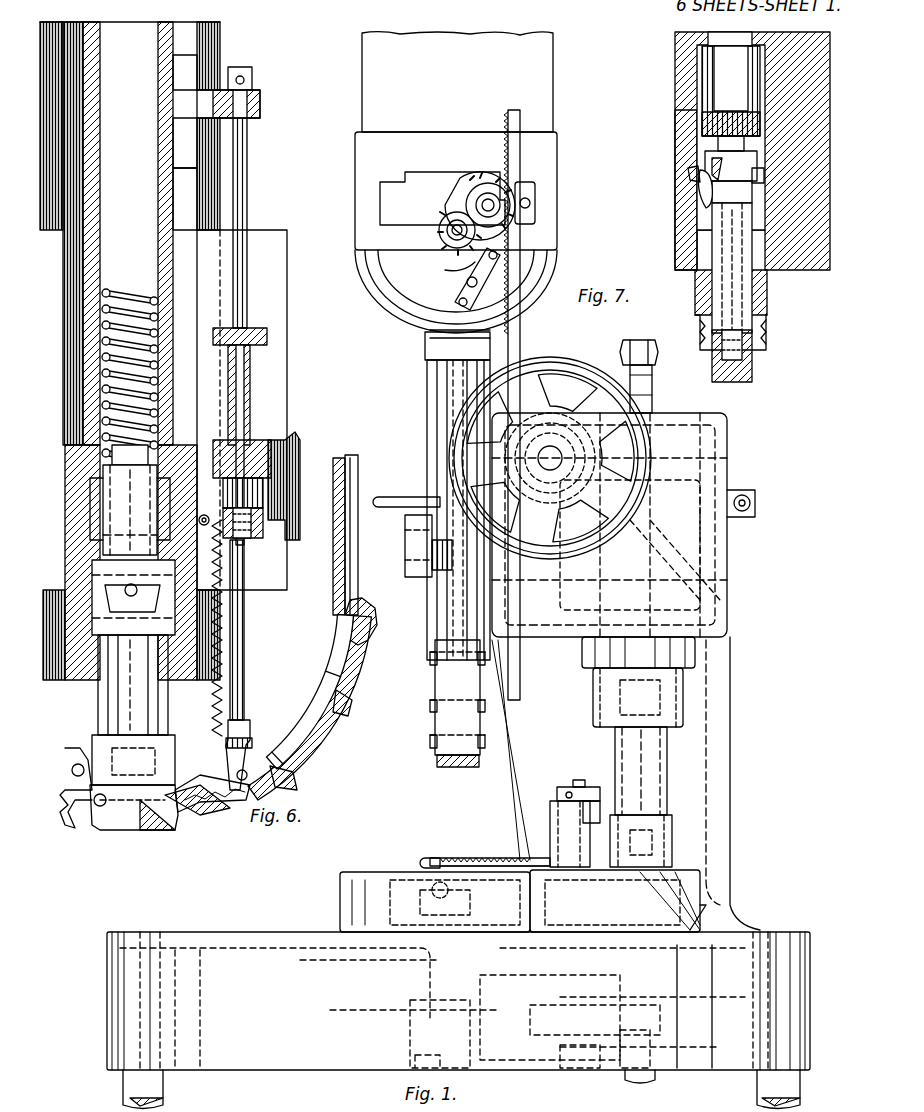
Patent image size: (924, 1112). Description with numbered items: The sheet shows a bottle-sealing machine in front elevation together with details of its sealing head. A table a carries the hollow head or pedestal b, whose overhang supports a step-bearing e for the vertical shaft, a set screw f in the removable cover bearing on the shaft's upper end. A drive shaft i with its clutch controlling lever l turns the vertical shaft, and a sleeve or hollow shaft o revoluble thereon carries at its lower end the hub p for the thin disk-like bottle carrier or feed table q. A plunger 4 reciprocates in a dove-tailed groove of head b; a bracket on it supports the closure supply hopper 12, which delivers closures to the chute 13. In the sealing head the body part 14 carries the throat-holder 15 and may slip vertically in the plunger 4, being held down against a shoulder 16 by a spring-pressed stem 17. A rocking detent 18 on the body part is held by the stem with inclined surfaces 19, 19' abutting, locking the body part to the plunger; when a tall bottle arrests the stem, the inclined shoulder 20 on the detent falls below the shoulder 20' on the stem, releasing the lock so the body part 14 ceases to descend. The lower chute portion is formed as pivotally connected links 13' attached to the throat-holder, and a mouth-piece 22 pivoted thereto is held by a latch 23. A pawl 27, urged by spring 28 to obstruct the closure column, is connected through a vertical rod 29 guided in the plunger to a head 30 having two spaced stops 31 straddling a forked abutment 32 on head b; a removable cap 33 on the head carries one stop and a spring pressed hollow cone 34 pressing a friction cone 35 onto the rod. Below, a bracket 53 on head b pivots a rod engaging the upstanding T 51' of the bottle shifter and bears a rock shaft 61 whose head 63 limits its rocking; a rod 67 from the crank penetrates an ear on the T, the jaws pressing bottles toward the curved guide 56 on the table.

In FIG. 6, the plunger 4 is at (80, 680).
In FIG. 7, the plunger 4 is at (675, 250).
In FIG. 1, the closure supply hopper 12 is at (557, 225).
In FIG. 6, the chute 13 is at (321, 627).
In FIG. 1, the chute 13 is at (444, 496).
In FIG. 6, the pivotally connected links 13' is at (278, 741).
In FIG. 1, the pivotally connected links 13' is at (444, 697).
In FIG. 6, the body part of the sealing head 14 is at (98, 716).
In FIG. 7, the body part of the sealing head 14 is at (767, 293).
In FIG. 6, the throat-holder 15 is at (160, 758).
In FIG. 6, the shoulder 16 is at (185, 650).
In FIG. 7, the shoulder 16 is at (770, 225).
In FIG. 6, the spring-pressed stem 17 is at (130, 500).
In FIG. 7, the spring-pressed stem 17 is at (745, 300).
In FIG. 6, the rocking detent 18 is at (95, 598).
In FIG. 7, the rocking detent 18 is at (700, 192).
In FIG. 7, the inclined surface 19 is at (669, 166).
In FIG. 7, the inclined surface 19' is at (681, 184).
In FIG. 7, the inclined shoulder 20 is at (733, 158).
In FIG. 7, the inclined shoulder 20' is at (738, 185).
In FIG. 6, the mouth-piece 22 is at (122, 830).
In FIG. 1, the mouth-piece 22 is at (455, 767).
In FIG. 6, the latch 23 is at (65, 790).
In FIG. 6, the pawl 27 is at (255, 754).
In FIG. 6, the spring 28 is at (222, 652).
In FIG. 6, the vertical rod 29 is at (244, 610).
In FIG. 6, the head 30 is at (250, 400).
In FIG. 6, the stops 31 is at (267, 336).
In FIG. 6, the forked abutment 32 is at (300, 460).
In FIG. 6, the removable cap 33 is at (263, 525).
In FIG. 6, the spring pressed hollow cone 34 is at (263, 502).
In FIG. 6, the friction cone 35 is at (268, 482).
In FIG. 1, the upstanding T 51' is at (490, 848).
In FIG. 1, the bracket 53 is at (550, 810).
In FIG. 1, the curved guide 56 is at (368, 872).
In FIG. 1, the rock shaft 61 is at (560, 787).
In FIG. 1, the head 63 is at (592, 790).
In FIG. 1, the rod 67 is at (430, 858).
In FIG. 1, the table a is at (785, 932).
In FIG. 6, the hollow head or pedestal b is at (287, 378).
In FIG. 1, the hollow head or pedestal b is at (727, 588).
In FIG. 1, the step-bearing e is at (582, 660).
In FIG. 1, the set screw f is at (658, 352).
In FIG. 1, the drive shaft i is at (550, 446).
In FIG. 1, the clutch controlling lever l is at (412, 497).
In FIG. 1, the sleeve or hollow shaft o is at (667, 765).
In FIG. 1, the hub p is at (690, 872).
In FIG. 1, the bottle carrier or feed table q is at (735, 905).